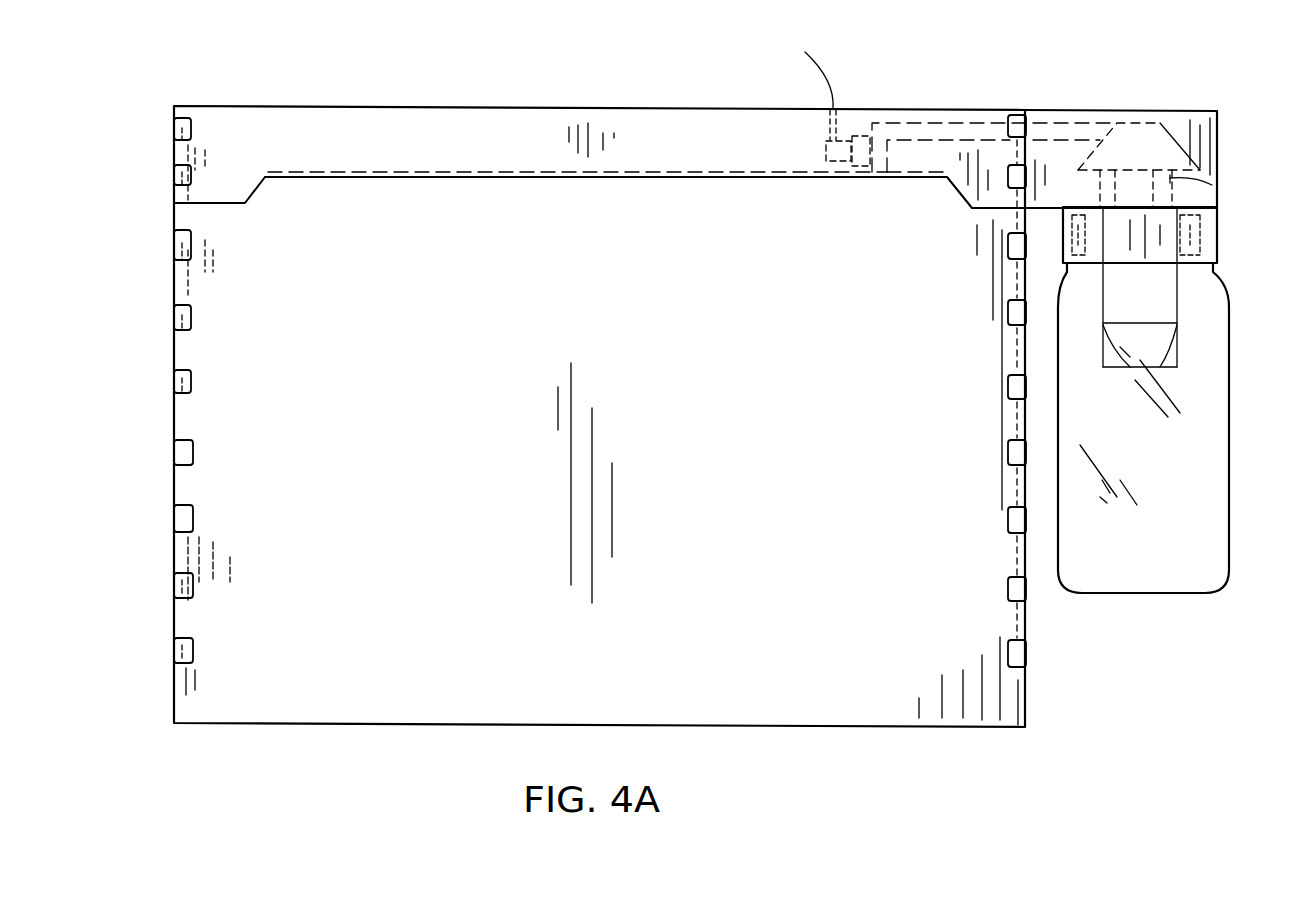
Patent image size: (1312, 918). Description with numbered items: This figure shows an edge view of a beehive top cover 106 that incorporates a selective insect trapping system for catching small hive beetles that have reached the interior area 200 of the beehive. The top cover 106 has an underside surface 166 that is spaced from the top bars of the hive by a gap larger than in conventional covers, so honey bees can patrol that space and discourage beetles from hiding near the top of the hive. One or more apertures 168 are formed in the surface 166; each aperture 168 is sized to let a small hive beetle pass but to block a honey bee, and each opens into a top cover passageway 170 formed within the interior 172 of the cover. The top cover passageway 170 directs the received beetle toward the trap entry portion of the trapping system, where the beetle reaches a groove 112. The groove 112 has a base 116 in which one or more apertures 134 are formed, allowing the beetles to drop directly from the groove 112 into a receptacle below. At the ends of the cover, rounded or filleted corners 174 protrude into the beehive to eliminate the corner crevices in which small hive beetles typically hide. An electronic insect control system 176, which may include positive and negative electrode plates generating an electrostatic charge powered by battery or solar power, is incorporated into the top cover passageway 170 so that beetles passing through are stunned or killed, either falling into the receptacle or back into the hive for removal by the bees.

The top cover 106 is at (323, 130).
The groove 112 is at (1165, 157).
The base 116 is at (1133, 168).
The apertures 134 is at (1225, 187).
The surface 166 is at (470, 178).
The apertures 168 is at (877, 172).
The top cover passageways 170 is at (962, 128).
The interior 172 is at (638, 140).
The rounded or filleted corners 174 is at (213, 188).
The electronic insect control system 176 is at (858, 137).
The interior area 200 is at (310, 475).